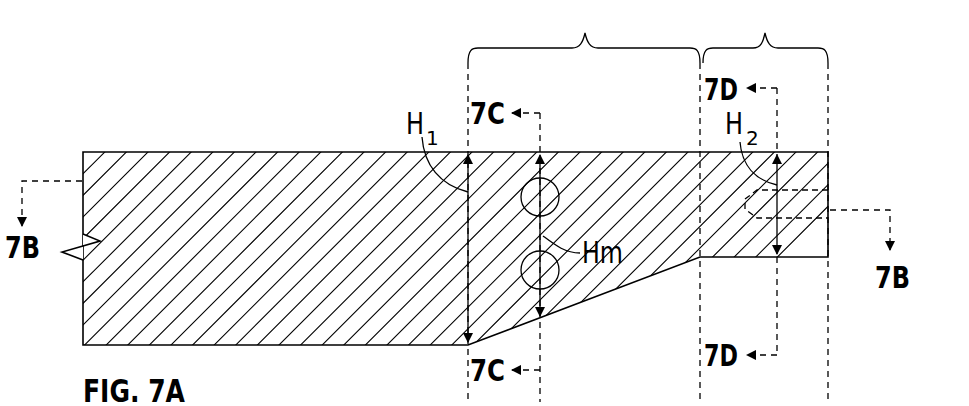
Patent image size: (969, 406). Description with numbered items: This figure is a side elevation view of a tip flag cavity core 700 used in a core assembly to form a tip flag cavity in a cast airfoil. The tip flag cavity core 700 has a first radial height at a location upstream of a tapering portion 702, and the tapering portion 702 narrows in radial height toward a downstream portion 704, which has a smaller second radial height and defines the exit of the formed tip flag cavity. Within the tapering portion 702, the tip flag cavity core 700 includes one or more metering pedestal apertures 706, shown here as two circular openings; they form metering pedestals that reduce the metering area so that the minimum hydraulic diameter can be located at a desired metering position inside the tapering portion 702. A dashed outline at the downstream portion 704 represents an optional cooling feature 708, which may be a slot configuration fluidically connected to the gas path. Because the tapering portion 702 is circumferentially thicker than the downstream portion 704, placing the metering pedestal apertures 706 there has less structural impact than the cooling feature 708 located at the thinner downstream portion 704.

The tip flag cavity core 700 is at (280, 165).
The tapering portion 702 is at (584, 201).
The downstream portion 704 is at (765, 201).
The metering pedestal apertures 706 is at (548, 190).
The cooling feature 708 is at (795, 203).